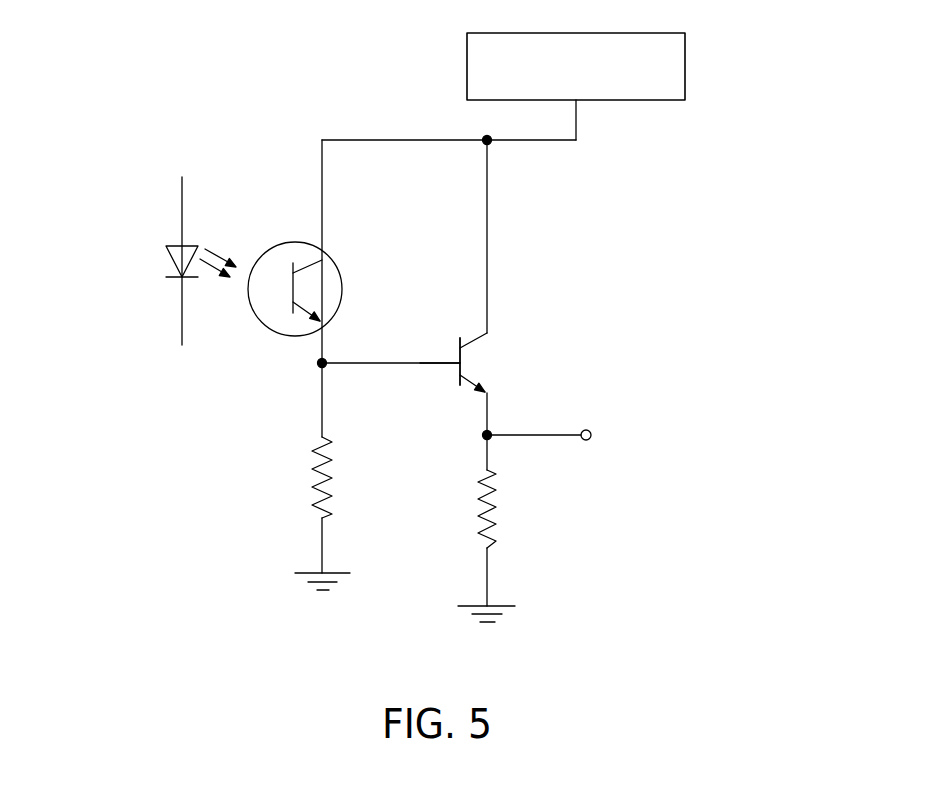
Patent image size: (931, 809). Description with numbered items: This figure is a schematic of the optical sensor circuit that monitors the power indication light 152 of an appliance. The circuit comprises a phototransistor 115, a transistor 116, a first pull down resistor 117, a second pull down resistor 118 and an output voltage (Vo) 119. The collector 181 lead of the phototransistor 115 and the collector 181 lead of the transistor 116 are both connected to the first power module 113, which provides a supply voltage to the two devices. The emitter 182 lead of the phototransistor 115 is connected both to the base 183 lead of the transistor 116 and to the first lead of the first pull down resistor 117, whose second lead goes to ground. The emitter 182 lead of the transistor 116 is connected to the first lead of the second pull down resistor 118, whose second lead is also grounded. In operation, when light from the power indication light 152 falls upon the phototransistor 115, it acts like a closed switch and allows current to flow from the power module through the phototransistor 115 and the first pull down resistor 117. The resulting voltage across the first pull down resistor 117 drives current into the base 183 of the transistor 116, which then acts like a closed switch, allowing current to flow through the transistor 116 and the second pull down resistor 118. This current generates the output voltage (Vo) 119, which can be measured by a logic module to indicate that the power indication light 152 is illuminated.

The first power module 113 is at (685, 67).
The power indication light 152 is at (144, 248).
The phototransistor 115 is at (337, 268).
The transistor 116 is at (482, 355).
The first pull down resistor 117 is at (310, 460).
The second pull down resistor 118 is at (480, 515).
The output voltage (Vo) 119 is at (640, 442).
The collector 181 is at (328, 256).
The emitter 182 is at (325, 326).
The base 183 is at (455, 364).